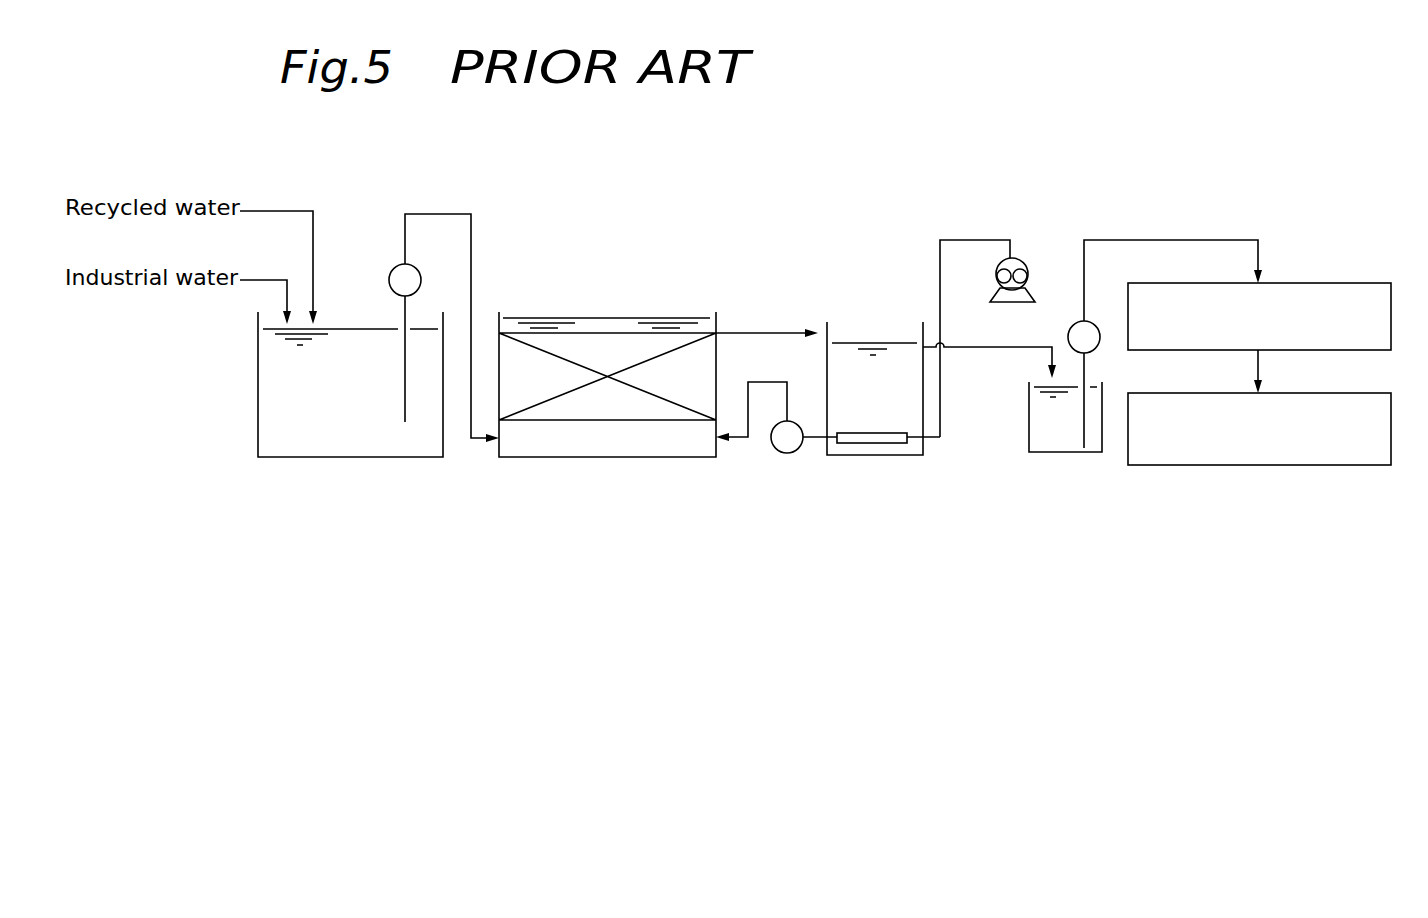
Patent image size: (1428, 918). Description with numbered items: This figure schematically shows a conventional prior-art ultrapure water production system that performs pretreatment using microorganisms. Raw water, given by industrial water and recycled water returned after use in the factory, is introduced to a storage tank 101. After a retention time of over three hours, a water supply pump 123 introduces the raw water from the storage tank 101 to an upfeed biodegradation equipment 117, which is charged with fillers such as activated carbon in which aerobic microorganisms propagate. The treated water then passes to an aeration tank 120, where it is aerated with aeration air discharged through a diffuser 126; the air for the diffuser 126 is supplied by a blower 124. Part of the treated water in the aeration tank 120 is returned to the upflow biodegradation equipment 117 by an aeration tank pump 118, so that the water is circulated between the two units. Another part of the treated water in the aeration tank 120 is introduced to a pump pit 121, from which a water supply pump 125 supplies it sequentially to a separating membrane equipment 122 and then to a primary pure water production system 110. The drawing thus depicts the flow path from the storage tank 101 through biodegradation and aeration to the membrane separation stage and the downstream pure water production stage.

The storage tank 101 is at (258, 380).
The primary pure water production system 110 is at (1375, 392).
The upfeed biodegradation equipment 117 is at (628, 278).
The aeration tank pump 118 is at (782, 454).
The aeration tank 120 is at (872, 286).
The pump pit 121 is at (1029, 420).
The separating membrane equipment 122 is at (1375, 282).
The water supply pump 123 is at (392, 272).
The blower 124 is at (1028, 262).
The water supply pump 125 is at (1098, 320).
The diffuser 126 is at (875, 432).